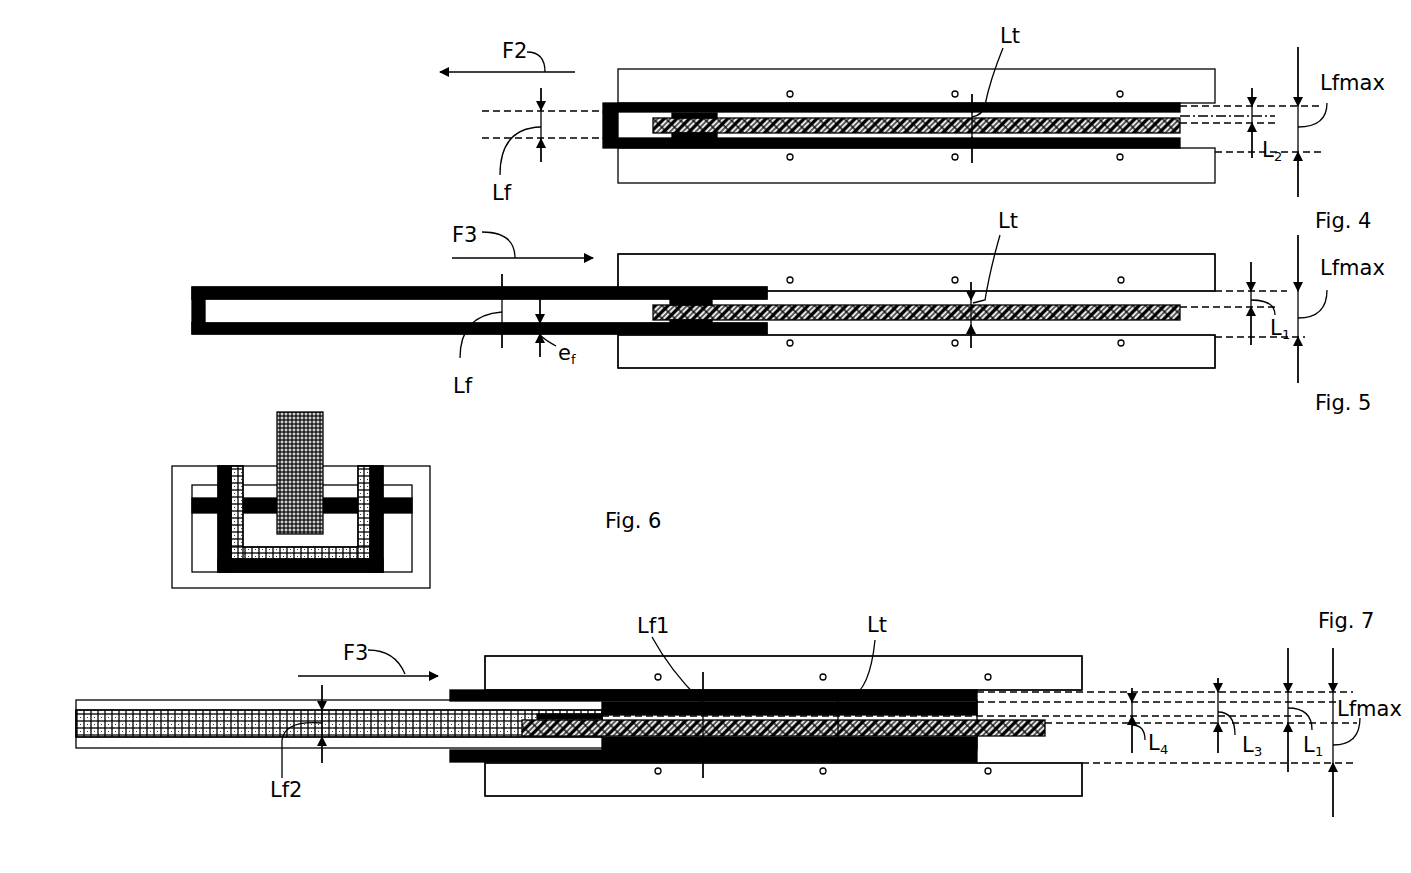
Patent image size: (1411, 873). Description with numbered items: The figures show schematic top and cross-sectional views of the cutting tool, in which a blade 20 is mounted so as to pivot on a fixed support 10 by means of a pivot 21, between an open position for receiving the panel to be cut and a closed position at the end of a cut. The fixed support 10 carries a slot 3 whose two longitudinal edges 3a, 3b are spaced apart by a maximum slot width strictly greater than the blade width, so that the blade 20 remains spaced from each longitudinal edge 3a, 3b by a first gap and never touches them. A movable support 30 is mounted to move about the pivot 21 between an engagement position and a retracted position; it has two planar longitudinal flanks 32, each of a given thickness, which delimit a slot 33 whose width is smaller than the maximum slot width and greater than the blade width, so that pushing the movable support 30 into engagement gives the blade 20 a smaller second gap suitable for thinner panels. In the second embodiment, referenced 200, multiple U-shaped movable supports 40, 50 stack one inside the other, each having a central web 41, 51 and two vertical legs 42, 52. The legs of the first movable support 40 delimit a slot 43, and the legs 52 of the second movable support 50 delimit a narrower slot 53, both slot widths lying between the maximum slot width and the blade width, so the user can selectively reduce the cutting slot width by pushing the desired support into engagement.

In FIG. 4, the slot 3 is at (1210, 138).
In FIG. 5, the slot 3 is at (1205, 317).
In FIG. 5, the longitudinal edge 3a is at (1075, 370).
In FIG. 7, the longitudinal edge 3a is at (1055, 765).
In FIG. 5, the longitudinal edge 3b is at (1030, 290).
In FIG. 7, the longitudinal edge 3b is at (1028, 690).
In FIG. 4, the fixed support 10 is at (935, 170).
In FIG. 5, the fixed support 10 is at (947, 258).
In FIG. 6, the fixed support 10 is at (420, 500).
In FIG. 7, the fixed support 10 is at (790, 684).
In FIG. 6, the blade 20 is at (315, 425).
In FIG. 7, the blade 20 is at (765, 738).
In FIG. 4, the pivot 21 is at (697, 113).
In FIG. 5, the pivot 21 is at (693, 299).
In FIG. 6, the pivot 21 is at (268, 500).
In FIG. 7, the pivot 21 is at (557, 713).
In FIG. 4, the movable support 30 is at (606, 97).
In FIG. 5, the movable support 30 is at (298, 280).
In FIG. 5, the longitudinal flanks 32 is at (227, 287).
In FIG. 4, the slot 33 is at (636, 118).
In FIG. 5, the slot 33 is at (394, 309).
In FIG. 6, the movable support 40 is at (236, 575).
In FIG. 7, the movable support 40 is at (945, 690).
In FIG. 6, the central web 41 is at (290, 567).
In FIG. 7, the central web 41 is at (789, 726).
In FIG. 6, the vertical legs 42 is at (225, 468).
In FIG. 7, the slot 43 is at (970, 745).
In FIG. 6, the movable support 50 is at (358, 460).
In FIG. 7, the movable support 50 is at (232, 725).
In FIG. 6, the central web 51 is at (327, 550).
In FIG. 6, the vertical legs 52 is at (232, 468).
In FIG. 7, the slot 53 is at (150, 718).
In FIG. 6, the assembly 200 is at (475, 463).
In FIG. 7, the assembly 200 is at (1200, 582).